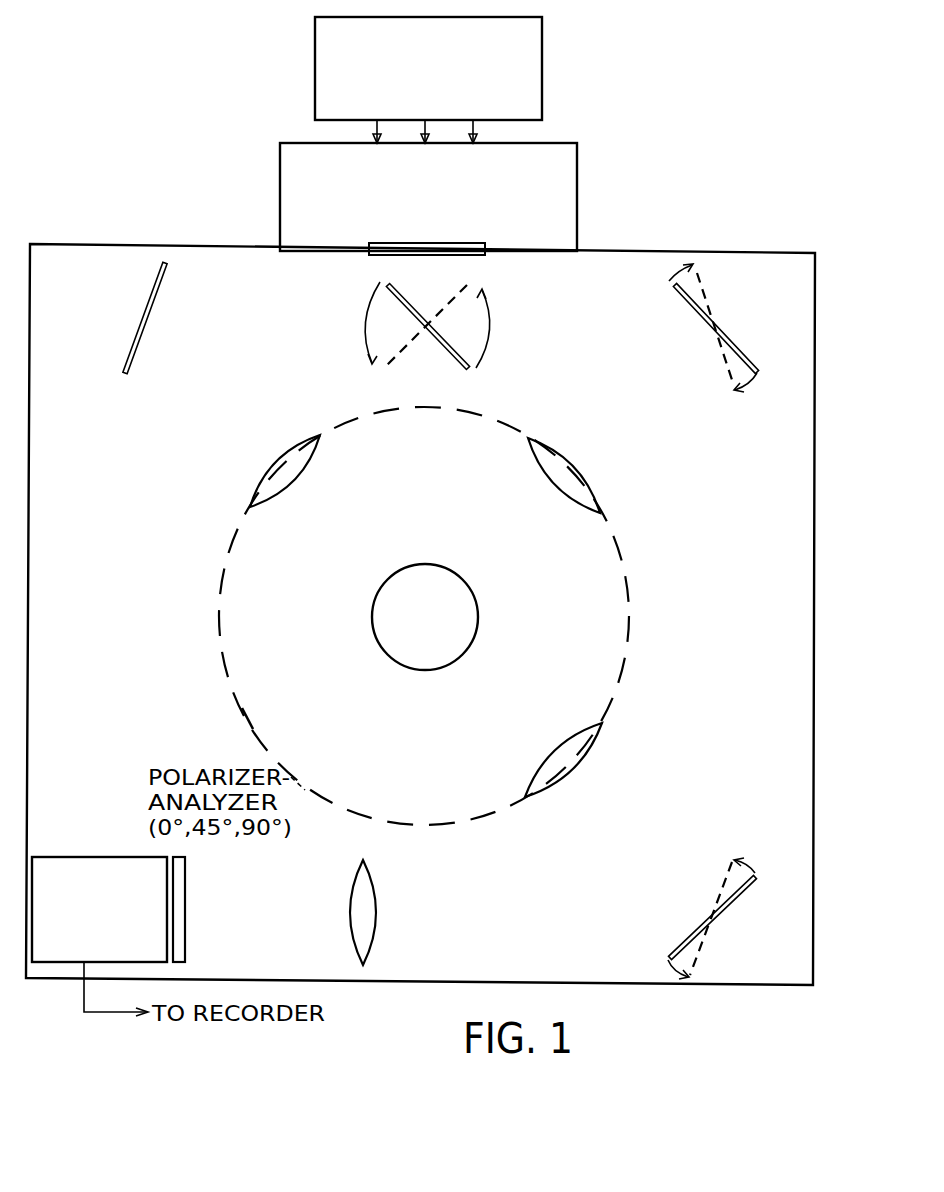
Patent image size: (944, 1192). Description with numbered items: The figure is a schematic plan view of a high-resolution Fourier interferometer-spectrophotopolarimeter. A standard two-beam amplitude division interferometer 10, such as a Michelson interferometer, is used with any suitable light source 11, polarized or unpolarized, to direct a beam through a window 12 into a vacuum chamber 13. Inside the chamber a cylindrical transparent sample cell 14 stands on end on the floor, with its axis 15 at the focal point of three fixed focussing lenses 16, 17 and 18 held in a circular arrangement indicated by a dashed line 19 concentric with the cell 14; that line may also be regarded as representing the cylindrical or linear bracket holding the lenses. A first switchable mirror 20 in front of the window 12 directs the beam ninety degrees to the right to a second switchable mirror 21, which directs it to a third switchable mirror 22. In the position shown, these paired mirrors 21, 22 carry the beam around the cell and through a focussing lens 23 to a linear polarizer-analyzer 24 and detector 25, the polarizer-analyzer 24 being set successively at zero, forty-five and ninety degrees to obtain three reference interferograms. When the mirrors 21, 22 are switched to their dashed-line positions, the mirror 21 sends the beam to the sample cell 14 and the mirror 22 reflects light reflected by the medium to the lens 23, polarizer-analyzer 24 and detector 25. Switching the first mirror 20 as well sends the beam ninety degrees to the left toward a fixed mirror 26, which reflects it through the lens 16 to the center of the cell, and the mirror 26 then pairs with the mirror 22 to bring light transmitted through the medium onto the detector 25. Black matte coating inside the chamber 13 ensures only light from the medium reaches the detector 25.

The interferometer 10 is at (578, 196).
The light source 11 is at (543, 77).
The window 12 is at (478, 258).
The vacuum chamber 13 is at (629, 252).
The sample cell 14 is at (373, 599).
The axis 15 is at (423, 617).
The focussing lens 16 is at (290, 446).
The focussing lens 17 is at (568, 456).
The focussing lens 18 is at (559, 750).
The dashed line 19 is at (242, 722).
The first switchable mirror 20 is at (419, 311).
The second switchable mirror 21 is at (691, 309).
The third switchable mirror 22 is at (683, 937).
The focussing lens 23 is at (368, 957).
The linear polarizer-analyzer 24 is at (186, 890).
The detector 25 is at (118, 856).
The fixed mirror 26 is at (157, 308).